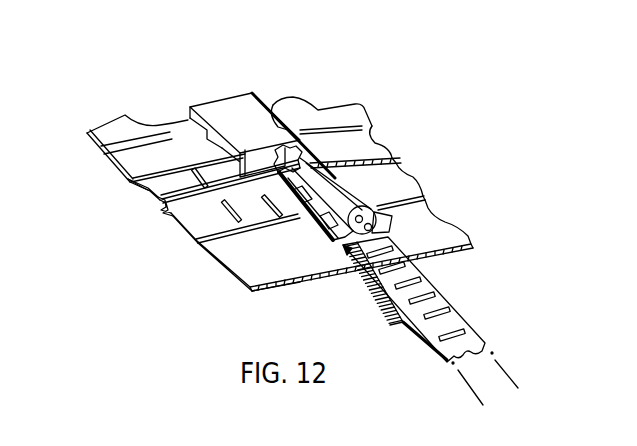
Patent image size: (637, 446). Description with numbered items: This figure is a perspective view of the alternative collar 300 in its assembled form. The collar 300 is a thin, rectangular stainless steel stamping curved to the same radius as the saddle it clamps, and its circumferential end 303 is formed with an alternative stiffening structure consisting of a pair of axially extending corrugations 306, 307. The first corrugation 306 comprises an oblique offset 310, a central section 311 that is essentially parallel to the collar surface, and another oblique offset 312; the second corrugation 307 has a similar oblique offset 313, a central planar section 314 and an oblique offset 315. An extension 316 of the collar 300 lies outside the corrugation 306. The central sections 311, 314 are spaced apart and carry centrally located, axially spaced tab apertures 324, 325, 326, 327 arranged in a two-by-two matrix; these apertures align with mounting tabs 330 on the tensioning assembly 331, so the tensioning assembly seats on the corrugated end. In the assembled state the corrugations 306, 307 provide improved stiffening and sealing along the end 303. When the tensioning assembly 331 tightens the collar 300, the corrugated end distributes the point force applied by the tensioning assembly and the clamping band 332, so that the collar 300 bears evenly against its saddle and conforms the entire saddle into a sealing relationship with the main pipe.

The collar 300 is at (375, 100).
The circumferential end 303 is at (460, 231).
The corrugation 306 is at (395, 187).
The corrugation 307 is at (362, 148).
The oblique offset 310 is at (198, 246).
The central section 311 is at (183, 232).
The oblique offset 312 is at (163, 222).
The oblique offset 313 is at (150, 208).
The central planar section 314 is at (147, 194).
The oblique offset 315 is at (141, 187).
The extension 316 is at (283, 275).
The tab aperture 324 is at (130, 180).
The tab aperture 325 is at (215, 172).
The tab aperture 326 is at (240, 226).
The tab aperture 327 is at (300, 228).
The mounting tab 330 is at (187, 120).
The tensioning assembly 331 is at (232, 108).
The clamping band 332 is at (462, 312).